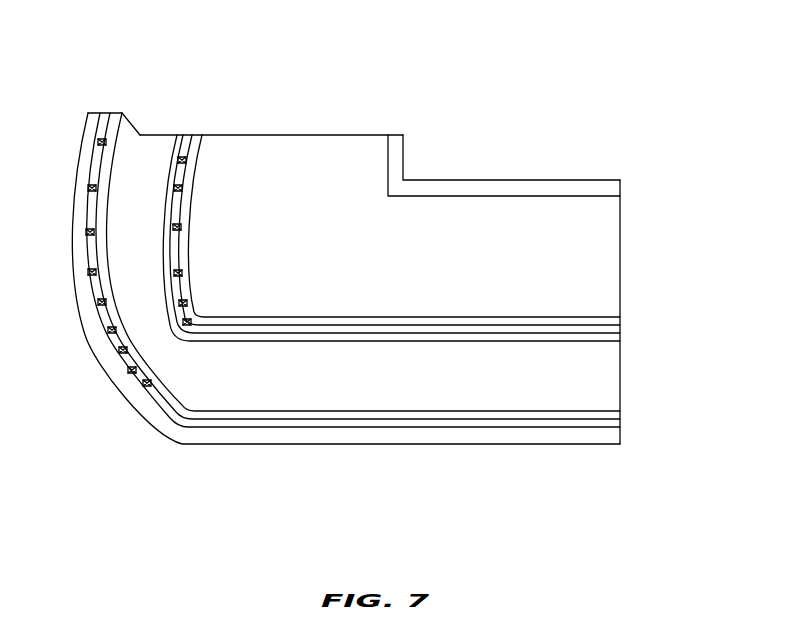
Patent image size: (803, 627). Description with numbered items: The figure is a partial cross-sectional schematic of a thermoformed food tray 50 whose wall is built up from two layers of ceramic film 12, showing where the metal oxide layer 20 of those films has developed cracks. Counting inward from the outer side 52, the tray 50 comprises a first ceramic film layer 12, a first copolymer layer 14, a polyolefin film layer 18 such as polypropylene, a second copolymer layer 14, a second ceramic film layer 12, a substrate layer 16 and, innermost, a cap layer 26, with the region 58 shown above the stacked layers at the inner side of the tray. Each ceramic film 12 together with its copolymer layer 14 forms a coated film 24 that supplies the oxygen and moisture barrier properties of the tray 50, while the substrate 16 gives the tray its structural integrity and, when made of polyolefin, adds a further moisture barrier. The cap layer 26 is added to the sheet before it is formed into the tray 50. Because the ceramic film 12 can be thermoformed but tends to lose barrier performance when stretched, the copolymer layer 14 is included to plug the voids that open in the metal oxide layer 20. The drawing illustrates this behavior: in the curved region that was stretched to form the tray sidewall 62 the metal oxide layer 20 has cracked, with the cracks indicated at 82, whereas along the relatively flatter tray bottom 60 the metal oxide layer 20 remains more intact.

The ceramic film 12 is at (681, 283).
The copolymer layer 14 is at (118, 134).
The substrate 16 is at (620, 242).
The polyolefin film layer 18 is at (82, 140).
The metal oxide layer 20 is at (237, 416).
The coated film 24 is at (706, 283).
The cap layer 26 is at (572, 180).
The tray 50 is at (585, 72).
The outer side 52 is at (480, 446).
The top region 58 is at (462, 122).
The tray bottom 60 is at (310, 446).
The tray sidewall 62 is at (152, 423).
The gap 82 is at (88, 188).